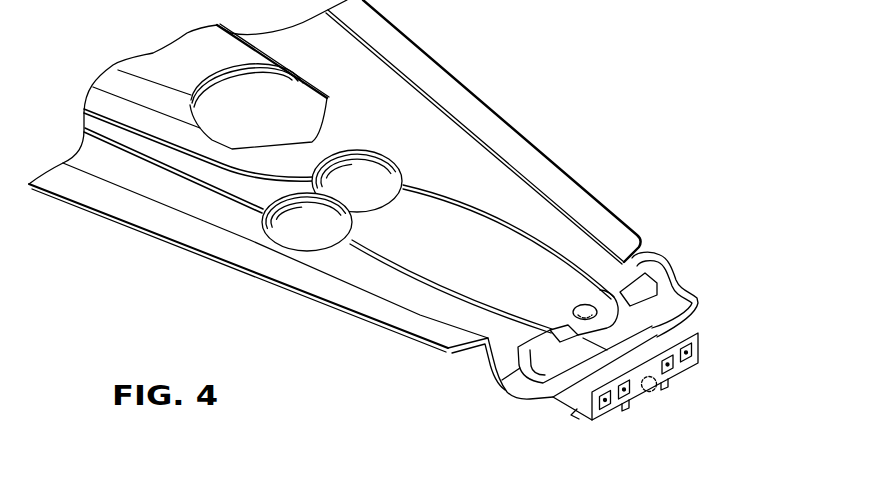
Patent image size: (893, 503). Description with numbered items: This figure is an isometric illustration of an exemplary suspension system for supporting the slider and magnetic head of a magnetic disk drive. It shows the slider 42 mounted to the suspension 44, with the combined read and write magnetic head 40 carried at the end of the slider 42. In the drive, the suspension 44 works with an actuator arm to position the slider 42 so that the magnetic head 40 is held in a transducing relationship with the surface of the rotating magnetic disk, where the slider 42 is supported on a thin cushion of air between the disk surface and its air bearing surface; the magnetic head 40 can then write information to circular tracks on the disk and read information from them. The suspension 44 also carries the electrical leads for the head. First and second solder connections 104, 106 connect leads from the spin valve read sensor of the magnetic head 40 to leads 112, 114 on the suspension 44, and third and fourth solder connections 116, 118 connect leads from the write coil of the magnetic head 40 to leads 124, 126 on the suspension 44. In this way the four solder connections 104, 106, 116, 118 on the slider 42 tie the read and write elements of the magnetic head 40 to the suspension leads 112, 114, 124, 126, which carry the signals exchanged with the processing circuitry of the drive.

The magnetic head 40 is at (660, 393).
The slider 42 is at (547, 406).
The suspension 44 is at (506, 109).
The first solder connection 104 is at (598, 409).
The second solder connection 106 is at (690, 351).
The lead 112 is at (377, 262).
The lead 114 is at (557, 248).
The third solder connection 116 is at (618, 401).
The fourth solder connection 118 is at (669, 368).
The lead 124 is at (427, 277).
The lead 126 is at (481, 213).